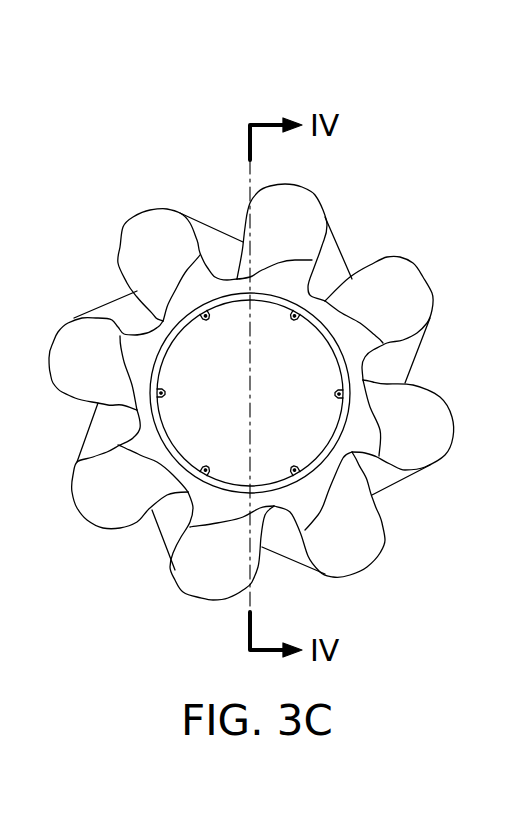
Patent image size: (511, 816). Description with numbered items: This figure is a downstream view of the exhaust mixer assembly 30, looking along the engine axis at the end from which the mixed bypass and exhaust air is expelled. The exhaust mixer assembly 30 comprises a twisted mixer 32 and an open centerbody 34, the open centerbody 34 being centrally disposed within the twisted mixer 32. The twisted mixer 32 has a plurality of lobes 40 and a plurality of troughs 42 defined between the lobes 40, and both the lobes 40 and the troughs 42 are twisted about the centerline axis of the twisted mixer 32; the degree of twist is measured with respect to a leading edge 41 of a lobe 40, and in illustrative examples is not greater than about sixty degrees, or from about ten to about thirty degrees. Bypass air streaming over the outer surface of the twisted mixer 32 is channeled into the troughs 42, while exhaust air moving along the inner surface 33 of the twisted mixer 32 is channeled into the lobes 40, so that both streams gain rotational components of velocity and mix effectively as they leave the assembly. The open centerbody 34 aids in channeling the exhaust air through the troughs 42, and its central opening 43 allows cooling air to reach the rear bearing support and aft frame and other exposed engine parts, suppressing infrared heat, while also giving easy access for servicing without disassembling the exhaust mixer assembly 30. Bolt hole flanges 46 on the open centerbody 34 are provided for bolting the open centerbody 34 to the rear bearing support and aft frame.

The exhaust mixer assembly 30 is at (274, 361).
The twisted mixer 32 is at (362, 556).
The inner surface 33 is at (210, 585).
The open centerbody 34 is at (323, 430).
The lobe 40 is at (150, 207).
The leading edge 41 is at (92, 455).
The trough 42 is at (222, 238).
The central opening 43 is at (300, 358).
The bolt hole flange 46 is at (343, 395).